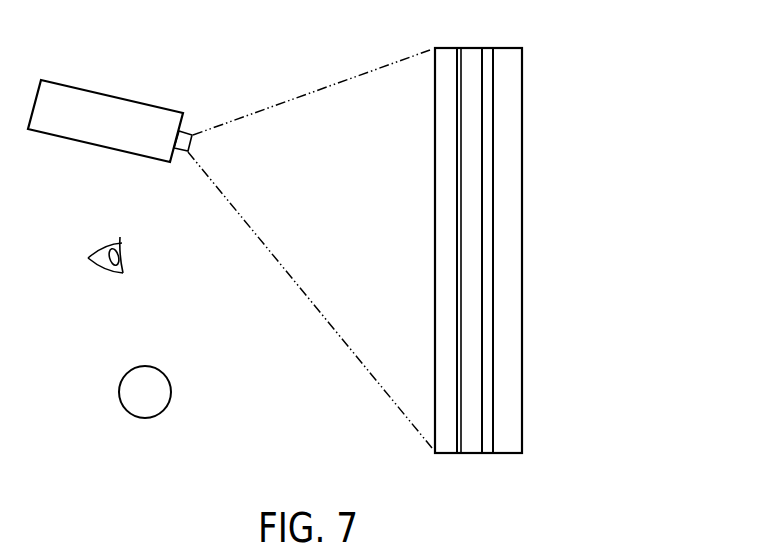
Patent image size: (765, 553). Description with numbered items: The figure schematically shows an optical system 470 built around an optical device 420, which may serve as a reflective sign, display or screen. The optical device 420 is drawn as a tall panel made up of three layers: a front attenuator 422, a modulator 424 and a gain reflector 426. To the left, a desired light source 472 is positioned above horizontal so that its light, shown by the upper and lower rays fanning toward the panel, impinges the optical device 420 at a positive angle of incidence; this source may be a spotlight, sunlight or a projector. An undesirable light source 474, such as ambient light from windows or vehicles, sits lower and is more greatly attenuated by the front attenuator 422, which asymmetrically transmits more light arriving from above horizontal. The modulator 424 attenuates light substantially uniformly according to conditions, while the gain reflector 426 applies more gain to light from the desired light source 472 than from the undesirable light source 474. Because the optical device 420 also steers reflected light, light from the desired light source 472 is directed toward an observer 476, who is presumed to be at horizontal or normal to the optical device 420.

The optical system 470 is at (258, 44).
The desired light source 472 is at (75, 141).
The undesirable light source 474 is at (163, 367).
The observer 476 is at (103, 266).
The optical device 420 is at (509, 42).
The front attenuator 422 is at (443, 455).
The modulator 424 is at (473, 455).
The gain reflector 426 is at (507, 455).